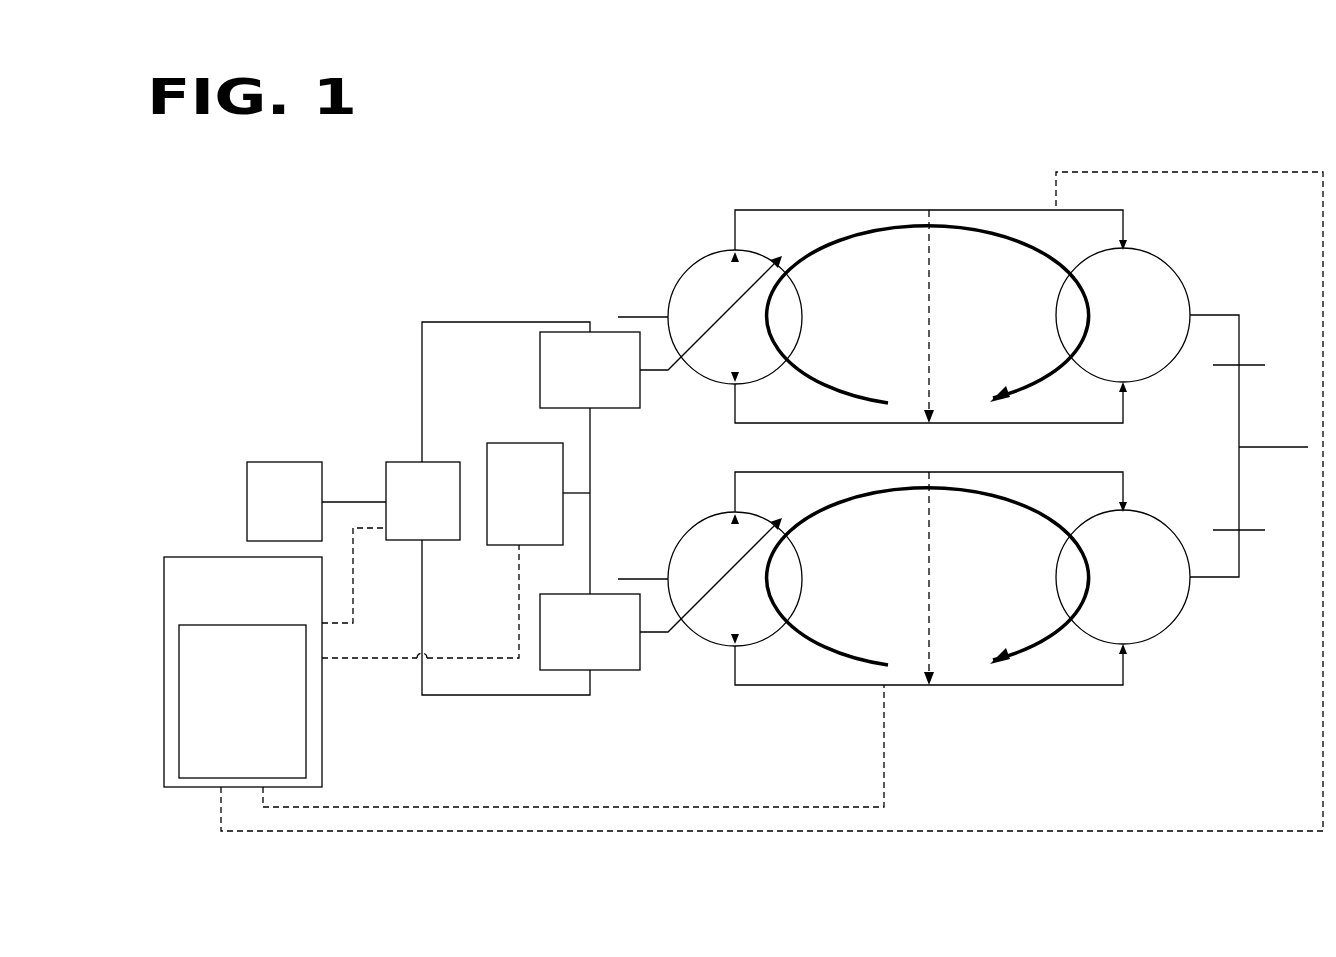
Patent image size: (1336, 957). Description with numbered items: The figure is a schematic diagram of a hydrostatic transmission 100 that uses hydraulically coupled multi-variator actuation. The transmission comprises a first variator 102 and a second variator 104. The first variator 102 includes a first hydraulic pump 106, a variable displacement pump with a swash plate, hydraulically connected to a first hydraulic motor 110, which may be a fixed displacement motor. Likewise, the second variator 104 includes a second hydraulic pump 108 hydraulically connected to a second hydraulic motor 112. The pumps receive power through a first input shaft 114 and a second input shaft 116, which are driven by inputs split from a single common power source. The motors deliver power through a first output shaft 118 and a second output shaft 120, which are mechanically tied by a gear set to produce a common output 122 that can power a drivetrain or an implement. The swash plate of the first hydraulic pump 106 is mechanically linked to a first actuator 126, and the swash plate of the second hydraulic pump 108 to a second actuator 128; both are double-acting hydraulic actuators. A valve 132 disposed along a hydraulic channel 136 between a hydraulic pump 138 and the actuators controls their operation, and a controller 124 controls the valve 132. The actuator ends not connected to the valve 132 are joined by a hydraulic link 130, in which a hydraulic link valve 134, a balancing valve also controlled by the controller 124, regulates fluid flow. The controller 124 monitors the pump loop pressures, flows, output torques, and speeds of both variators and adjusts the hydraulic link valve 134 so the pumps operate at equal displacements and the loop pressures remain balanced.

The hydrostatic transmission 100 is at (268, 240).
The first variator 102 is at (937, 163).
The second variator 104 is at (939, 710).
The first hydraulic pump 106 is at (700, 262).
The second hydraulic pump 108 is at (710, 522).
The first hydraulic motor 110 is at (1166, 265).
The second hydraulic motor 112 is at (1160, 525).
The first input shaft 114 is at (635, 316).
The second input shaft 116 is at (658, 578).
The first output shaft 118 is at (1228, 315).
The second output shaft 120 is at (1228, 578).
The common output 122 is at (1268, 446).
The controller 124 is at (743, 501).
The first actuator 126 is at (590, 370).
The second actuator 128 is at (590, 632).
The hydraulic link 130 is at (595, 477).
The valve 132 is at (423, 501).
The hydraulic link valve 134 is at (525, 494).
The hydraulic channel 136 is at (421, 366).
The hydraulic pump 138 is at (316, 501).